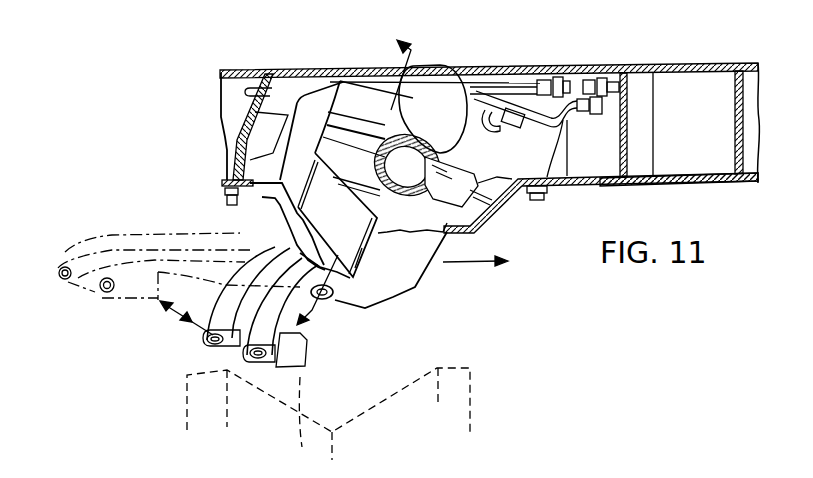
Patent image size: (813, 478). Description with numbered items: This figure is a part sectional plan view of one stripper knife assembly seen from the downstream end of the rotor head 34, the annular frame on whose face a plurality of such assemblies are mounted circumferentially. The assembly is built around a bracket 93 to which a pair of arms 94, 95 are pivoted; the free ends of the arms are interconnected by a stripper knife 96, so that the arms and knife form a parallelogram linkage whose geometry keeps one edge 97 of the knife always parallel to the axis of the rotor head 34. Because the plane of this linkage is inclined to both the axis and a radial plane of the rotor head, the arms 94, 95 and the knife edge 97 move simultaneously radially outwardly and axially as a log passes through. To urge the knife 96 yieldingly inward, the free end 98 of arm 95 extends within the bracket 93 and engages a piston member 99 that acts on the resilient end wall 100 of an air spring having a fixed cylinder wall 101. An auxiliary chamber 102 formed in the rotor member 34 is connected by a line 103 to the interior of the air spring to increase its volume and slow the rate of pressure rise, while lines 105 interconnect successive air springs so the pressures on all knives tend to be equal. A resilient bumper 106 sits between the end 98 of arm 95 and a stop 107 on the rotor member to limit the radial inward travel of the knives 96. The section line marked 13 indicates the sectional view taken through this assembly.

The section line of FIG. 13 is at (365, 177).
The rotor head 34 is at (630, 64).
The bracket 93 is at (415, 276).
The arm 94 is at (257, 266).
The arm 95 is at (283, 312).
The stripper knife 96 is at (210, 343).
The knife edge 97 is at (288, 360).
The free end of arm 98 is at (310, 100).
The piston member 99 is at (352, 96).
The resilient end wall 100 is at (440, 78).
The fixed cylinder wall 101 is at (483, 91).
The auxiliary chamber 102 is at (692, 66).
The line 103 is at (567, 118).
The lines 105 is at (517, 83).
The resilient bumper 106 is at (268, 118).
The stop 107 is at (221, 116).